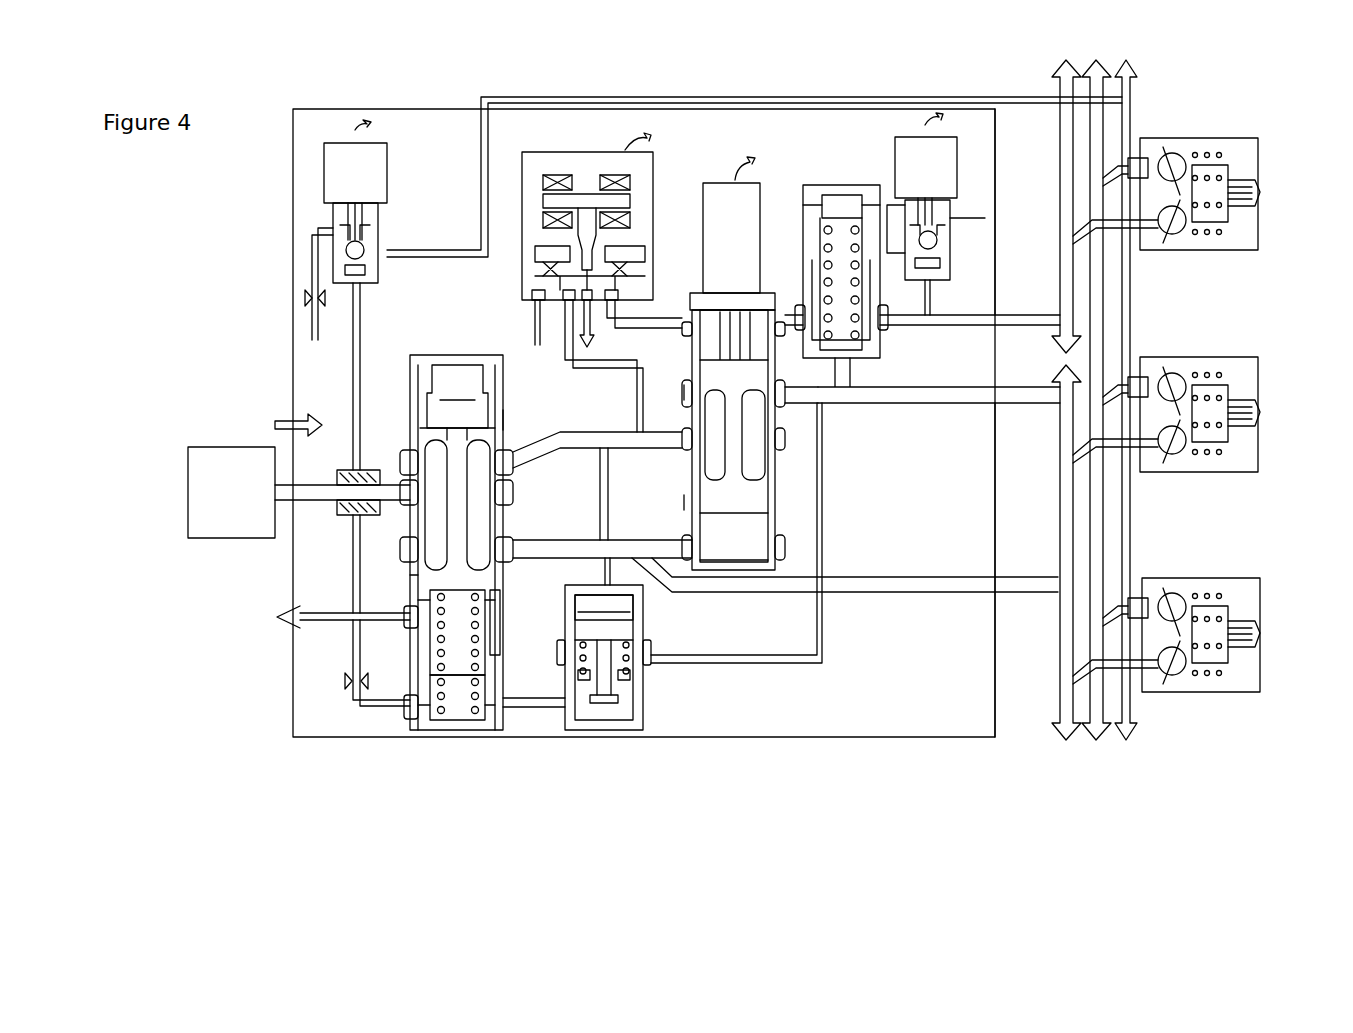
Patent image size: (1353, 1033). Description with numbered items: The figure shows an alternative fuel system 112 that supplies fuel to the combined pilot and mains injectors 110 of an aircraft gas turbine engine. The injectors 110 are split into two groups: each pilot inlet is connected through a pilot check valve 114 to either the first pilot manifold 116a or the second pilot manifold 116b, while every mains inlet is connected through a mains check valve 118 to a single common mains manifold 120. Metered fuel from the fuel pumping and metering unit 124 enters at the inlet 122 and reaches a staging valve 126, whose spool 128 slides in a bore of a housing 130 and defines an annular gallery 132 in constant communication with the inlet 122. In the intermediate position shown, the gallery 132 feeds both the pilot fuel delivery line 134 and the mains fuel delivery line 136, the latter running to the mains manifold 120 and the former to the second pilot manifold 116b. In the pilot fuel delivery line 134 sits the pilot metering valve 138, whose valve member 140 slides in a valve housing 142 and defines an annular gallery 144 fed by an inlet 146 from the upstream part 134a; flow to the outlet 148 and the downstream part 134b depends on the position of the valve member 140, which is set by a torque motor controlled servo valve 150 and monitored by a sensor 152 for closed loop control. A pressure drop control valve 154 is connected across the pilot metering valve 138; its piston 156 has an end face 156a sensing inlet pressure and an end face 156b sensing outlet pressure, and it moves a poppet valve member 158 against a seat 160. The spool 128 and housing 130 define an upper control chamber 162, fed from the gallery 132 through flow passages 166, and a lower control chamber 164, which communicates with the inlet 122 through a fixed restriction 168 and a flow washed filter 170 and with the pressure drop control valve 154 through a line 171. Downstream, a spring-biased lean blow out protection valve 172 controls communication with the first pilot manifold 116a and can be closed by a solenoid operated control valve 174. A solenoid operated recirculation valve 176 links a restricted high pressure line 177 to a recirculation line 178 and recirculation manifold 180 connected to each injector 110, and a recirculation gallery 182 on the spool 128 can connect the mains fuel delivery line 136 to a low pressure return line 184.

The injectors 110 is at (1210, 418).
The fuel system 112 is at (429, 106).
The pilot check valve 114 is at (1164, 254).
The first pilot manifold 116a is at (1059, 116).
The second pilot manifold 116b is at (1061, 502).
The mains check valve 118 is at (1166, 140).
The mains manifold 120 is at (1124, 128).
The inlet 122 is at (328, 498).
The fuel pumping and metering unit 124 is at (226, 539).
The staging valve 126 is at (512, 420).
The spool 128 is at (413, 578).
The housing 130 is at (478, 511).
The annular gallery 132 is at (478, 490).
The pilot fuel delivery line 134 is at (900, 414).
The upstream part of pilot fuel delivery line 134a is at (595, 448).
The downstream part of pilot fuel delivery line 134b is at (972, 402).
The mains fuel delivery line 136 is at (556, 540).
The pilot metering valve 138 is at (755, 431).
The valve member 140 is at (691, 502).
The valve housing 142 is at (782, 530).
The annular gallery 144 is at (753, 466).
The inlet 146 is at (682, 392).
The outlet 148 is at (778, 400).
The torque motor controlled servo valve 150 is at (660, 195).
The sensor 152 is at (764, 183).
The pressure drop control valve 154 is at (640, 647).
The piston 156 is at (667, 645).
The end face 156a is at (628, 615).
The end face 156b is at (626, 658).
The poppet valve member 158 is at (612, 704).
The seat 160 is at (618, 693).
The upper control chamber 162 is at (457, 396).
The lower control chamber 164 is at (456, 655).
The flow passages 166 is at (470, 430).
The fixed restriction 168 is at (347, 685).
The flow washed filter 170 is at (377, 472).
The line 171 is at (537, 700).
The lean blow out protection valve 172 is at (839, 181).
The solenoid operated control valve 174 is at (960, 170).
The solenoid operated recirculation valve 176 is at (390, 232).
The restricted high pressure line 177 is at (300, 262).
The recirculation line 178 is at (780, 96).
The recirculation manifold 180 is at (1130, 292).
The recirculation gallery 182 is at (498, 650).
The low pressure return line 184 is at (325, 622).